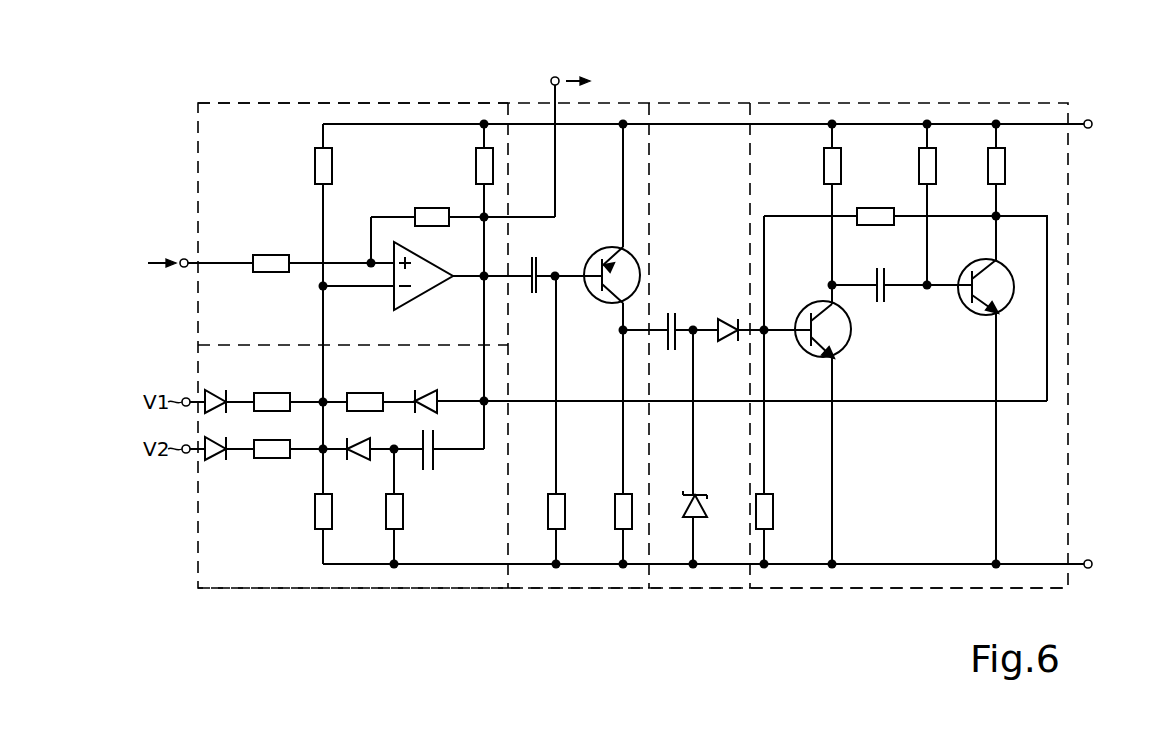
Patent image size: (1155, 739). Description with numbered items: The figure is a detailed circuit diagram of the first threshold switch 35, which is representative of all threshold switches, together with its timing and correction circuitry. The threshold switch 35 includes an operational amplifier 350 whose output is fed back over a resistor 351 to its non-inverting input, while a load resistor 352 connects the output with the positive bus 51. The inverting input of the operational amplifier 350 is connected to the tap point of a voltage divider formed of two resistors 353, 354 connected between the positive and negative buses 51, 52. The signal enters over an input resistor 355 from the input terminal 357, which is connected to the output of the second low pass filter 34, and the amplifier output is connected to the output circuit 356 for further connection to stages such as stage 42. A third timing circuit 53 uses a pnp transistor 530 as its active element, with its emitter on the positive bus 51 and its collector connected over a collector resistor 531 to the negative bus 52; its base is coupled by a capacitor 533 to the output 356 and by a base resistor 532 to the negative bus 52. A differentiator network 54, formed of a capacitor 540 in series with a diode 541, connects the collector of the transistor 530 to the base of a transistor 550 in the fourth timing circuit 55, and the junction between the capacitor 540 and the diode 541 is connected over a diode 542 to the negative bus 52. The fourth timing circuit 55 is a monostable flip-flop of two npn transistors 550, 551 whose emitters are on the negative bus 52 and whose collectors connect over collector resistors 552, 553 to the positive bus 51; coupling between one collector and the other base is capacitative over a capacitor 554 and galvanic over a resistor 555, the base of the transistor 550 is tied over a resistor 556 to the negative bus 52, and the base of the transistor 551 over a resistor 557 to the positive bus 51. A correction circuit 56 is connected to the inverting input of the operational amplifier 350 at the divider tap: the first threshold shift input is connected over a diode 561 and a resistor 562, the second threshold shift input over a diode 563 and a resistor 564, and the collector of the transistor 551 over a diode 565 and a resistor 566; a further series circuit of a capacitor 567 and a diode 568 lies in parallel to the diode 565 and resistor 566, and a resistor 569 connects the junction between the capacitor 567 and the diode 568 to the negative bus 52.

The first threshold switch 35 is at (277, 110).
The second low pass filter 34 is at (144, 264).
The input terminal 357 is at (184, 268).
The output terminal 356 is at (551, 81).
The stage 42 is at (623, 81).
The positive bus 51 is at (1093, 126).
The negative bus 52 is at (1093, 566).
The input resistor 355 is at (270, 273).
The resistor 353 is at (331, 170).
The load resistor 352 is at (480, 166).
The resistor 351 is at (442, 197).
The operational amplifier 350 is at (424, 296).
The capacitor 533 is at (537, 262).
The pnp transistor 530 is at (603, 300).
The base resistor 532 is at (563, 512).
The collector resistor 531 is at (620, 512).
The capacitor 540 is at (672, 312).
The diode 541 is at (725, 343).
The diode 542 is at (703, 508).
The npn transistor 550 is at (851, 338).
The npn transistor 551 is at (970, 312).
The collector resistor 552 is at (843, 167).
The resistor 557 is at (935, 167).
The collector resistor 553 is at (1004, 167).
The resistor 555 is at (875, 228).
The capacitor 554 is at (886, 296).
The resistor 556 is at (773, 512).
The diode 561 is at (220, 390).
The resistor 562 is at (272, 393).
The resistor 566 is at (363, 393).
The diode 565 is at (430, 390).
The diode 563 is at (218, 460).
The resistor 564 is at (275, 458).
The diode 568 is at (357, 460).
The capacitor 567 is at (435, 466).
The resistor 569 is at (403, 512).
The resistor 354 is at (334, 514).
The correction circuit 56 is at (272, 582).
The third timing circuit 53 is at (573, 578).
The differentiator network 54 is at (709, 578).
The fourth timing circuit 55 is at (902, 578).